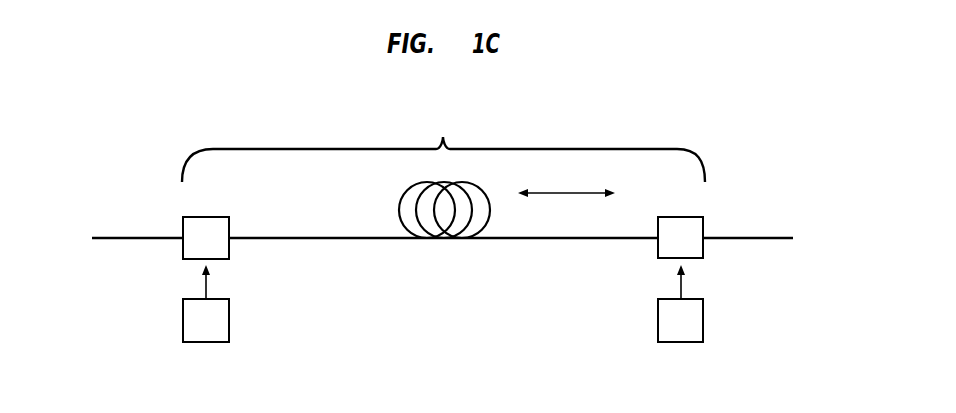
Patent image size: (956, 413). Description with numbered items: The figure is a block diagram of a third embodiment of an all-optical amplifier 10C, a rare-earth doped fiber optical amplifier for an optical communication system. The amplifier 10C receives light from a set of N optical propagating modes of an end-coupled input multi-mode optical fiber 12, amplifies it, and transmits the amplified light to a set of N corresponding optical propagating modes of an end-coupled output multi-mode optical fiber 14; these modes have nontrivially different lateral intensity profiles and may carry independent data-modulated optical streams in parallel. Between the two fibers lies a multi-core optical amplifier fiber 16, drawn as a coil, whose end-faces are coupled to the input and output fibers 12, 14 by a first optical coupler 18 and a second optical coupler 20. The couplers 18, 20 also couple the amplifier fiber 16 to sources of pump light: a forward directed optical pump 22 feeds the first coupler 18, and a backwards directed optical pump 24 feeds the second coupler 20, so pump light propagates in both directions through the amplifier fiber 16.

The all-optical amplifier 10C is at (443, 142).
The input multi-mode optical fiber 12 is at (147, 240).
The output multi-mode optical fiber 14 is at (767, 239).
The multi-core optical amplifier fiber 16 is at (573, 240).
The first optical coupler 18 is at (232, 218).
The second optical coupler 20 is at (706, 220).
The forward directed optical pump 22 is at (232, 300).
The backwards directed optical pump 24 is at (657, 335).